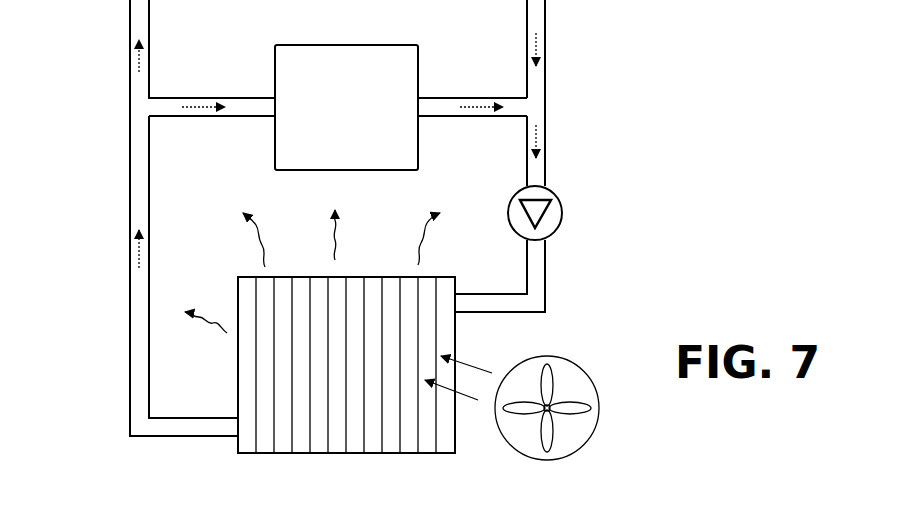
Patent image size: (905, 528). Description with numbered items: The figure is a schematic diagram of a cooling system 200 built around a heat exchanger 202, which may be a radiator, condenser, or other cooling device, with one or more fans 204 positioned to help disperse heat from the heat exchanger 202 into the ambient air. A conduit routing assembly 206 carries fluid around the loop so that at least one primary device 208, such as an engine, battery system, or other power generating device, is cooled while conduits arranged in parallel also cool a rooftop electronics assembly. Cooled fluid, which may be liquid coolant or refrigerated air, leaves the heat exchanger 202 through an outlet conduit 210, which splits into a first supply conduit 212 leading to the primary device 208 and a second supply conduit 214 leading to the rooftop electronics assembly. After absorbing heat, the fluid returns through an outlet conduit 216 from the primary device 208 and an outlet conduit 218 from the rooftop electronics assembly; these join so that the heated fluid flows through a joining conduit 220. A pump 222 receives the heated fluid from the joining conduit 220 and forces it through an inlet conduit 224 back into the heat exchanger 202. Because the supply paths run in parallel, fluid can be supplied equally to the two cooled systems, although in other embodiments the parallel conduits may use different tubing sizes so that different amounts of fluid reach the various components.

The cooling system 200 is at (737, 165).
The heat exchanger 202 is at (377, 452).
The fan 204 is at (550, 461).
The conduit routing assembly 206 is at (118, 128).
The primary device 208 is at (320, 172).
The outlet conduit 210 is at (130, 347).
The first supply conduit 212 is at (243, 98).
The second supply conduit 214 is at (130, 63).
The outlet conduit 216 is at (443, 98).
The outlet conduit 218 is at (545, 63).
The joining conduit 220 is at (545, 143).
The pump 222 is at (563, 209).
The inlet conduit 224 is at (545, 273).